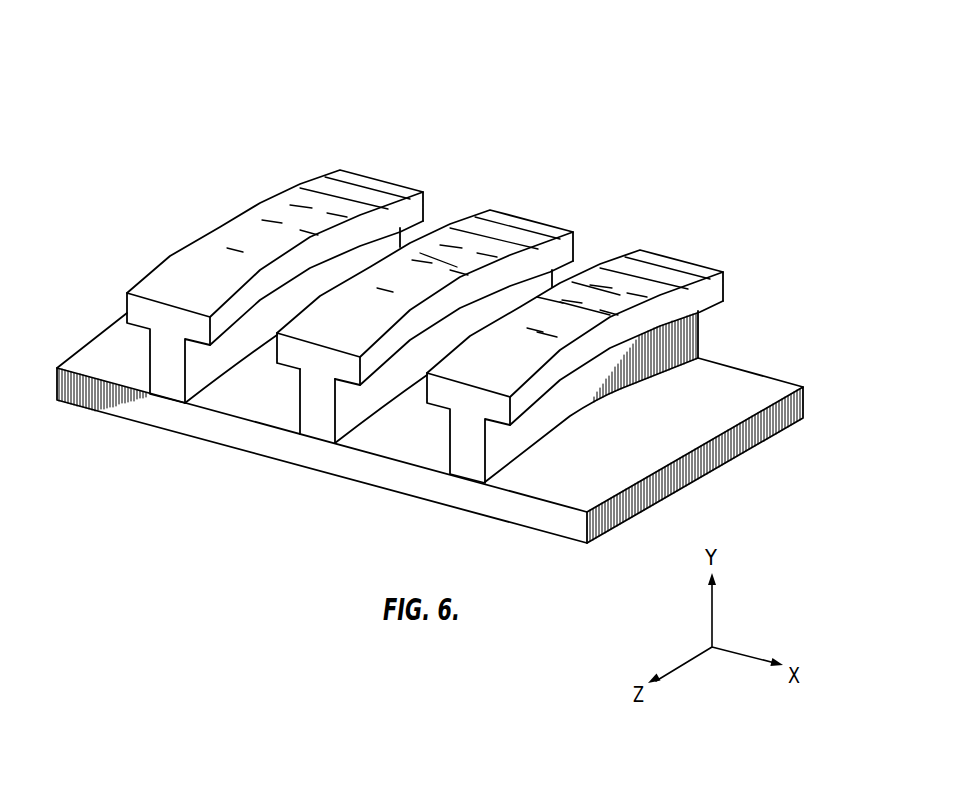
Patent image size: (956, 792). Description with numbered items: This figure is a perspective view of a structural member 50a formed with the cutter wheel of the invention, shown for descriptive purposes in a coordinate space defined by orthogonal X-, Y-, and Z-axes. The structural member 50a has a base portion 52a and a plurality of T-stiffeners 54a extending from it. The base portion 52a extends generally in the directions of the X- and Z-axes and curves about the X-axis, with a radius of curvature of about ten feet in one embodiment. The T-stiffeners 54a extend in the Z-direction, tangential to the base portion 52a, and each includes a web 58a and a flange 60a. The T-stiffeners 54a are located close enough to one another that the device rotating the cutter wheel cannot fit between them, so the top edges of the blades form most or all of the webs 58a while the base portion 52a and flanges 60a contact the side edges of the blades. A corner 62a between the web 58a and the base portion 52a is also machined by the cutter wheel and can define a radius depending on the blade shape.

The structural member 50a is at (617, 152).
The base portion 52a is at (190, 437).
The T-stiffeners 54a is at (425, 342).
The web 58a is at (298, 393).
The flange 60a is at (348, 385).
The corner 62a is at (382, 403).